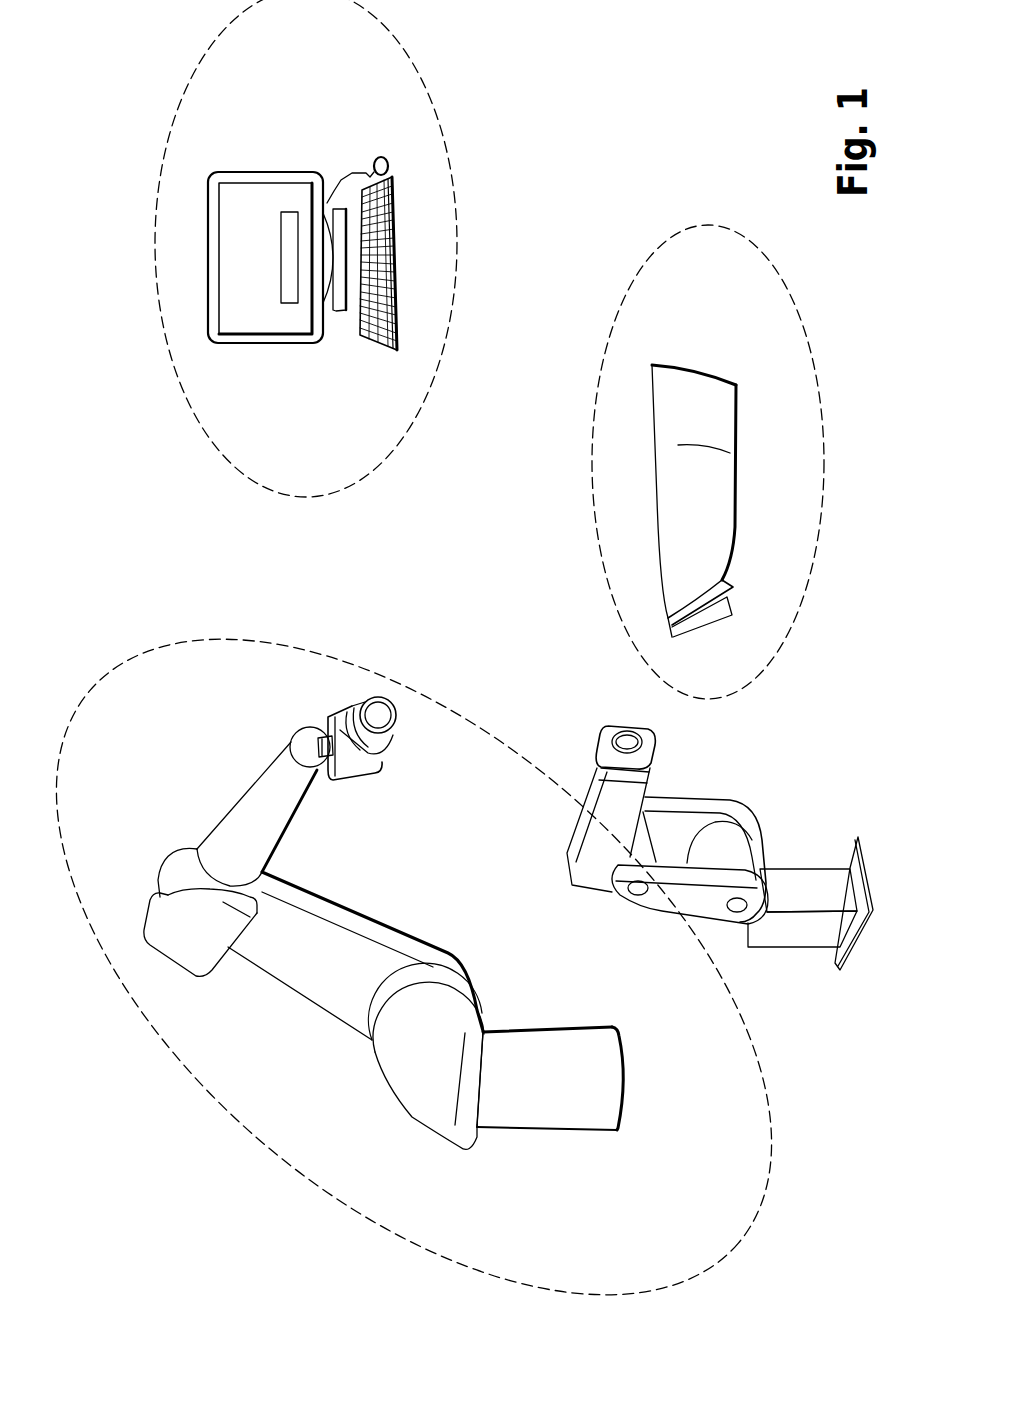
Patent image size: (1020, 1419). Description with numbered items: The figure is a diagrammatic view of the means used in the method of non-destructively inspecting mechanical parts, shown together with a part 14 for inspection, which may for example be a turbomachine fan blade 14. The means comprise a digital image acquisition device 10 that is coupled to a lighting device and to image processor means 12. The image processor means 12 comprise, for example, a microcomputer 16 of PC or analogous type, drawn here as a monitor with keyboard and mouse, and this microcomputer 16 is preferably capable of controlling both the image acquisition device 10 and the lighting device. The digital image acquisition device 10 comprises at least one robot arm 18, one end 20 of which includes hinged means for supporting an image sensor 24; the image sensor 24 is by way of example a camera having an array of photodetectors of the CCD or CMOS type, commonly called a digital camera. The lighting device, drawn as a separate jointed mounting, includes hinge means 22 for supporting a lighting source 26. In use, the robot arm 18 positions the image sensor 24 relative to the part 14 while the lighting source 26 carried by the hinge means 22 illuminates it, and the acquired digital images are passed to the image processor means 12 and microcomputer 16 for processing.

The digital image acquisition device 10 is at (586, 1119).
The image processor means 12 is at (392, 252).
The part for inspection 14 is at (657, 500).
The microcomputer 16 is at (213, 243).
The robot arm 18 is at (247, 820).
The end of robot arm 20 is at (308, 745).
The hinge means 22 is at (679, 810).
The image sensor 24 is at (366, 763).
The lighting source 26 is at (626, 735).